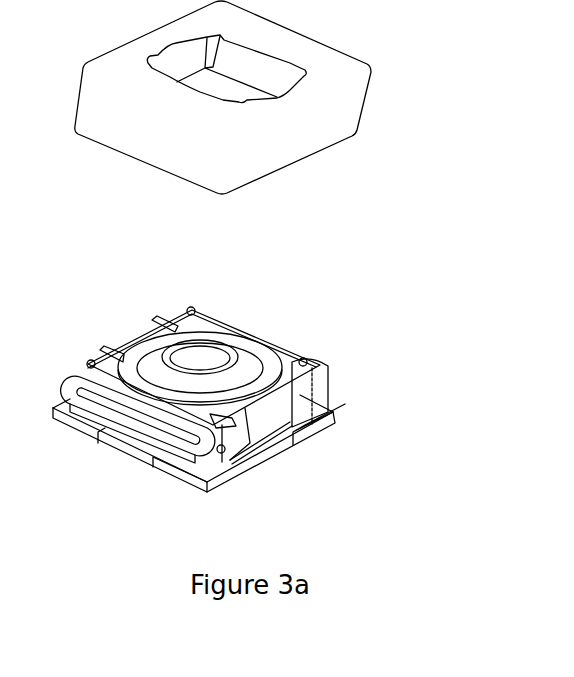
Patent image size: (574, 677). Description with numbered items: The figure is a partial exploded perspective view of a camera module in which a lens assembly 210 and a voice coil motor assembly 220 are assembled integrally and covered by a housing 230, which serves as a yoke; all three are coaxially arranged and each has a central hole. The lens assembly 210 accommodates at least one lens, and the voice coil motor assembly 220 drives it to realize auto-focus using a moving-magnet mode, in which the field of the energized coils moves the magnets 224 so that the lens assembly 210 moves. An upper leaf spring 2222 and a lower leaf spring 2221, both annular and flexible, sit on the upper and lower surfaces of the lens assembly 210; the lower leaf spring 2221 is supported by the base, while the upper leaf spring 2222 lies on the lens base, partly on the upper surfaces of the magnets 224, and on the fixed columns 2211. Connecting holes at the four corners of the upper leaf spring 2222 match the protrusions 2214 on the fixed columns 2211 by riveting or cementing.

The housing 230 is at (333, 68).
The lens assembly 210 is at (250, 353).
The voice coil motor assembly 220 is at (333, 393).
The lower leaf spring 2221 is at (322, 430).
The upper leaf spring 2222 is at (302, 363).
The magnets 224 is at (163, 403).
The fixed columns 2211 is at (223, 452).
The protrusions 2214 is at (222, 422).